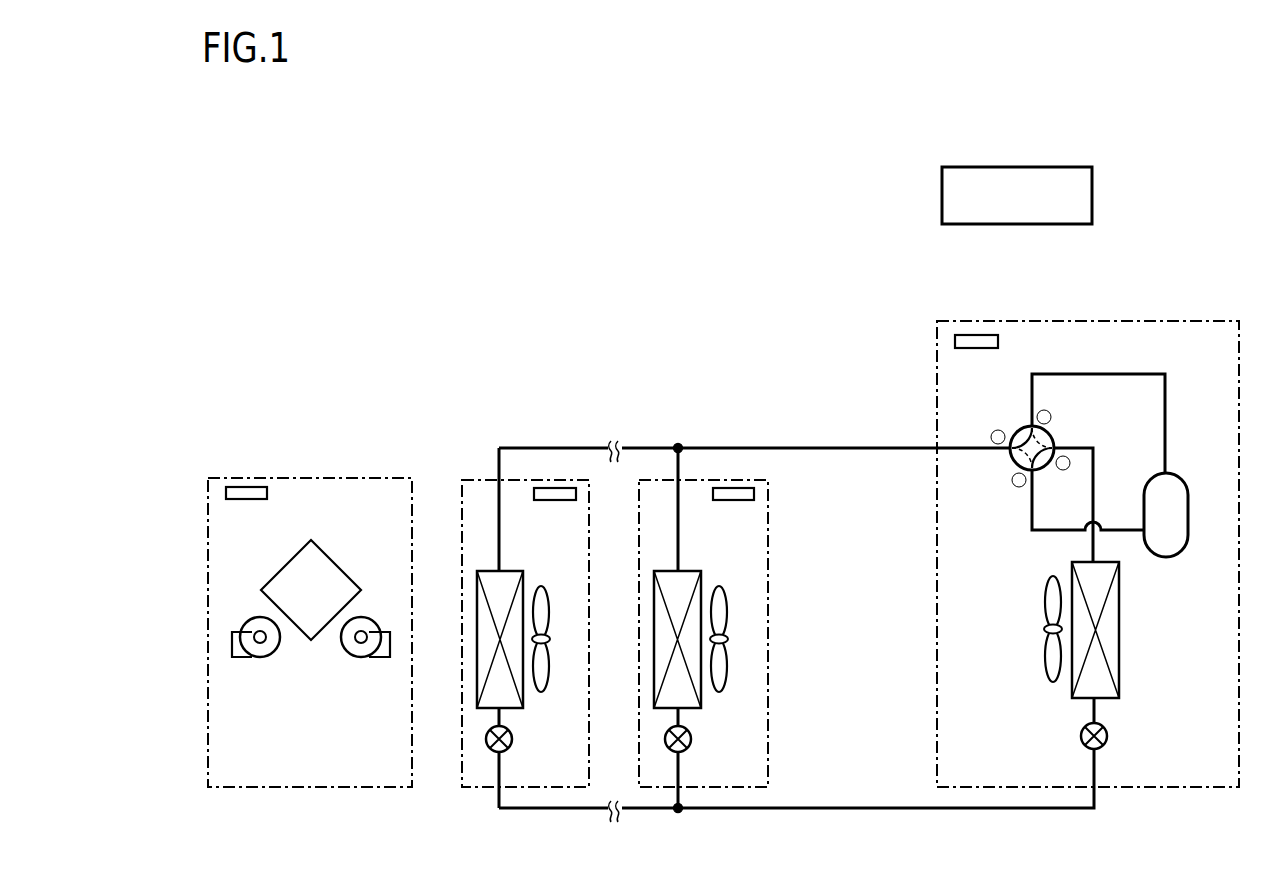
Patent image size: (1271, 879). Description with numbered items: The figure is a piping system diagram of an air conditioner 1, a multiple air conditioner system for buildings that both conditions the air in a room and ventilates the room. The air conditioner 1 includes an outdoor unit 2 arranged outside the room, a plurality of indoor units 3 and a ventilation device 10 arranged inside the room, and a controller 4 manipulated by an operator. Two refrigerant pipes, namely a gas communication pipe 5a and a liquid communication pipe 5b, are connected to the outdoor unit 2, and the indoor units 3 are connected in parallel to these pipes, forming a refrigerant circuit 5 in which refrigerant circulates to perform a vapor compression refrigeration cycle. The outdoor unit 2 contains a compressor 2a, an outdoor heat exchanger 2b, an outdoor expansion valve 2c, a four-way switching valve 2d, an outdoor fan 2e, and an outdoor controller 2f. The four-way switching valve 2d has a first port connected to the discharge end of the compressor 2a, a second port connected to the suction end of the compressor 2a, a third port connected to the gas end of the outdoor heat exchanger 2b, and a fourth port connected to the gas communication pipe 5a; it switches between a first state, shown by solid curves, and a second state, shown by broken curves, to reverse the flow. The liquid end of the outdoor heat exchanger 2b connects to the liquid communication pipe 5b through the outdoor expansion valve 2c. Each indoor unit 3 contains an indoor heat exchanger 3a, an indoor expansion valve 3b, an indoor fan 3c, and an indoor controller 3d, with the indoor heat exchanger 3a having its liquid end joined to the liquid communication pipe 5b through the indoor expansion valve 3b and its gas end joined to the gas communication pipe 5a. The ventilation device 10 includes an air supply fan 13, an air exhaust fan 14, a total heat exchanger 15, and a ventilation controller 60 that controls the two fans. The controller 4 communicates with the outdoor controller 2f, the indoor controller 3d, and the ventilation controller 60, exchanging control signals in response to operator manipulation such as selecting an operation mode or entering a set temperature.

The air conditioner 1 is at (1170, 112).
The outdoor unit 2 is at (1184, 321).
The compressor 2a is at (1178, 474).
The outdoor heat exchanger 2b is at (1119, 620).
The outdoor expansion valve 2c is at (1081, 736).
The four-way switching valve 2d is at (1020, 428).
The outdoor fan 2e is at (1045, 650).
The outdoor controller 2f is at (998, 342).
The indoor unit 3 is at (550, 478).
The indoor heat exchanger 3a is at (523, 700).
The indoor expansion valve 3b is at (512, 742).
The indoor fan 3c is at (541, 587).
The indoor controller 3d is at (560, 500).
The controller 4 is at (1093, 192).
The refrigerant circuit 5 is at (784, 593).
The gas communication pipe 5a is at (862, 448).
The liquid communication pipe 5b is at (874, 808).
The ventilation device 10 is at (330, 478).
The air supply fan 13 is at (363, 657).
The air exhaust fan 14 is at (258, 657).
The total heat exchanger 15 is at (311, 640).
The ventilation controller 60 is at (267, 493).